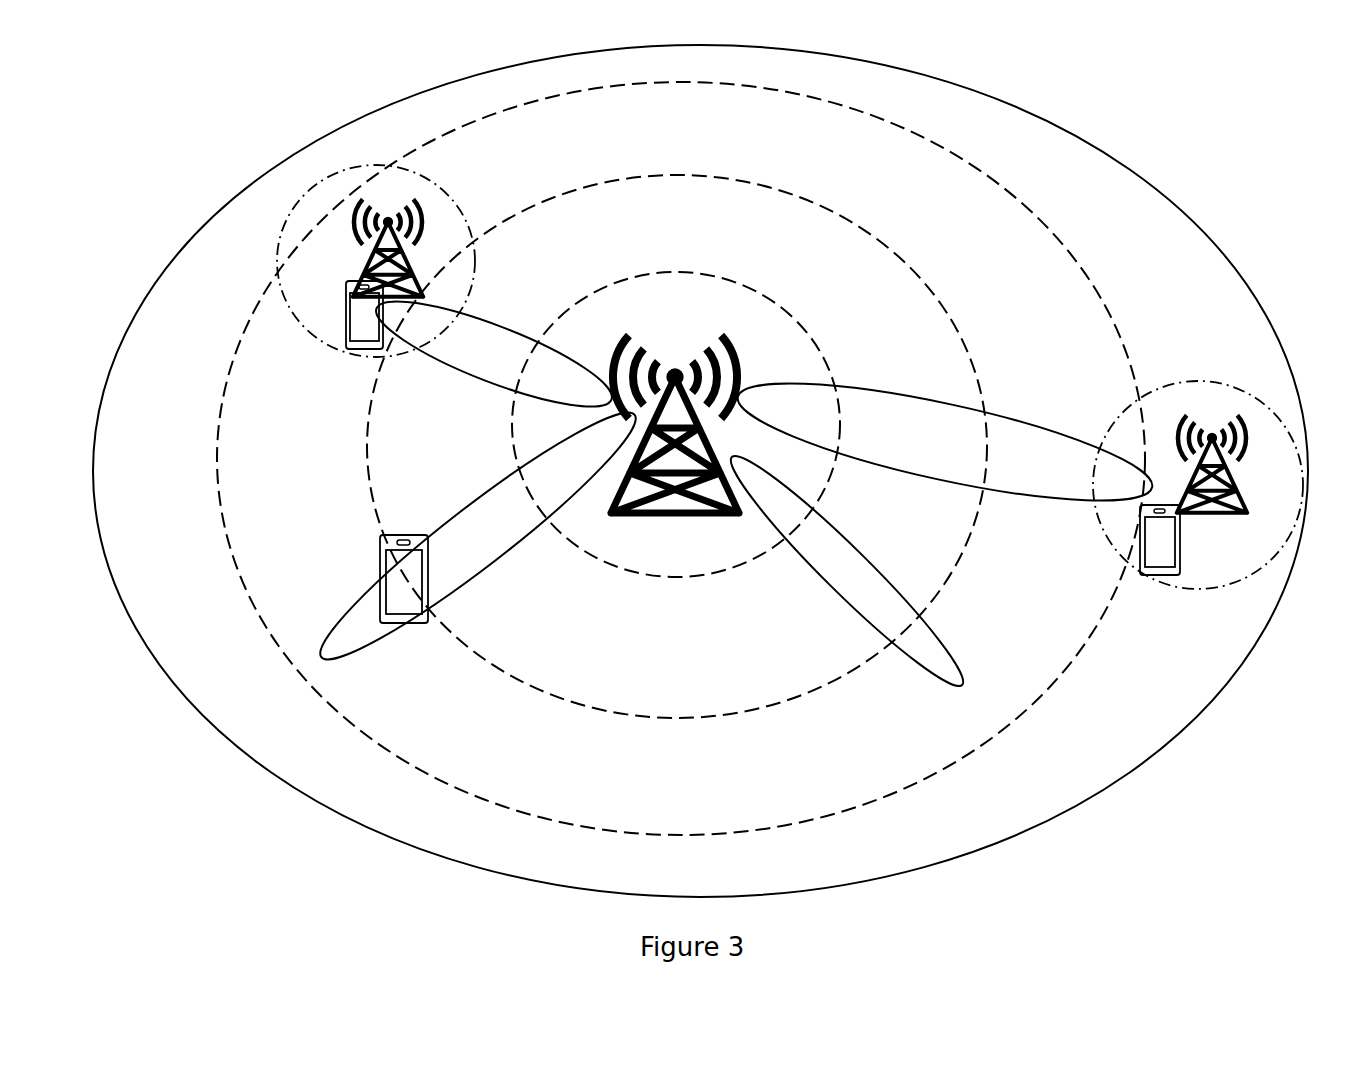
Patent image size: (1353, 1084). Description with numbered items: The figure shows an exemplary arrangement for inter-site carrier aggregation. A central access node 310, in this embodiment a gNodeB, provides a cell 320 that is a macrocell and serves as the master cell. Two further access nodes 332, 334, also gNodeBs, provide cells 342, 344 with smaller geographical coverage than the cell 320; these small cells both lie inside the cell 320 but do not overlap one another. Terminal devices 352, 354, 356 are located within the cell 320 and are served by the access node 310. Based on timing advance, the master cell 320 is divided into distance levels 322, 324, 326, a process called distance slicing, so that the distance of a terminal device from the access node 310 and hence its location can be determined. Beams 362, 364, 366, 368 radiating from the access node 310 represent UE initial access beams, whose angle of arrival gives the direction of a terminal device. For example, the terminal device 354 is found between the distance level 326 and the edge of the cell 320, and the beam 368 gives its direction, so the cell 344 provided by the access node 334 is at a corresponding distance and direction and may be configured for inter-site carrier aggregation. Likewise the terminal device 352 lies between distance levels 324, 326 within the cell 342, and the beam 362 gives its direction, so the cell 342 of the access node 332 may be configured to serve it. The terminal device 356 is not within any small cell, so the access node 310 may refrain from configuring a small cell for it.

The access node 310 is at (675, 420).
The cell 320 is at (1133, 165).
The distance level 322 is at (678, 580).
The distance level 324 is at (733, 720).
The distance level 326 is at (795, 825).
The access node 332 is at (388, 240).
The access node 334 is at (1212, 455).
The cell 342 is at (417, 172).
The cell 344 is at (1225, 387).
The terminal device 352 is at (344, 315).
The terminal device 354 is at (1180, 541).
The terminal device 356 is at (383, 579).
The initial access beam 362 is at (505, 325).
The initial access beam 364 is at (458, 515).
The initial access beam 366 is at (863, 553).
The initial access beam 368 is at (955, 408).